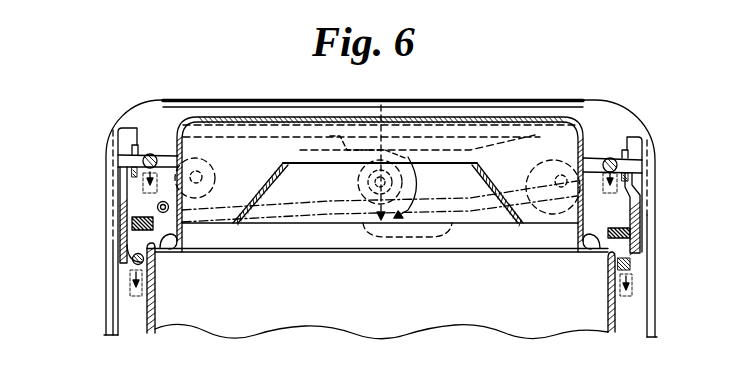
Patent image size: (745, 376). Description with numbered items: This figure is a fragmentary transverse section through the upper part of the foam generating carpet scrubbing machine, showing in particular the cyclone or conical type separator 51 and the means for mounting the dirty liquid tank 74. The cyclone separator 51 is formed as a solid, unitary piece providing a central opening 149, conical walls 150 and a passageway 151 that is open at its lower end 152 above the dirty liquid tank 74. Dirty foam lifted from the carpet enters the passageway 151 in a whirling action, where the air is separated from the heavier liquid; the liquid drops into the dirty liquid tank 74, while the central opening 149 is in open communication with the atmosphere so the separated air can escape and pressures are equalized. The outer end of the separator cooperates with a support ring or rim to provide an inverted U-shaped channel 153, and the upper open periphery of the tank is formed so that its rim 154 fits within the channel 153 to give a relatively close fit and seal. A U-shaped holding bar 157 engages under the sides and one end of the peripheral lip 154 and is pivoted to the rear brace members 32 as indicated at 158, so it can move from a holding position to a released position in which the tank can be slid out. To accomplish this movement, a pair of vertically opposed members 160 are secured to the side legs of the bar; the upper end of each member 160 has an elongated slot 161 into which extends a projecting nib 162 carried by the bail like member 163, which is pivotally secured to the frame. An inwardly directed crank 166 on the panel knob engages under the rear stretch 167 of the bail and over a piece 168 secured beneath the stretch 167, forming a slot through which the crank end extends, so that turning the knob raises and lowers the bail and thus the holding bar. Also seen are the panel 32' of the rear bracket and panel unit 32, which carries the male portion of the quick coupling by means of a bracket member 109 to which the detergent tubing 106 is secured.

The rear frame bracket and panel support member 32 is at (380, 201).
The panel 32' is at (380, 200).
The cyclone separator 51 is at (283, 101).
The dirty liquid tank 74 is at (380, 307).
The tubing 106 is at (128, 217).
The bracket member 109 is at (204, 245).
The central opening 149 is at (437, 162).
The conical walls 150 is at (523, 218).
The passageway 151 is at (518, 133).
The lower end 152 is at (244, 230).
The inverted U-shaped channel 153 is at (161, 253).
The rim 154 is at (130, 256).
The holding bar 157 is at (125, 272).
The pivot 158 is at (100, 267).
The vertically opposed members 160 is at (124, 214).
The elongated slot 161 is at (130, 128).
The projecting nib 162 is at (123, 160).
The bail like member 163 is at (149, 154).
The crank 166 is at (383, 105).
The rear stretch 167 is at (346, 134).
The piece 168 is at (427, 167).